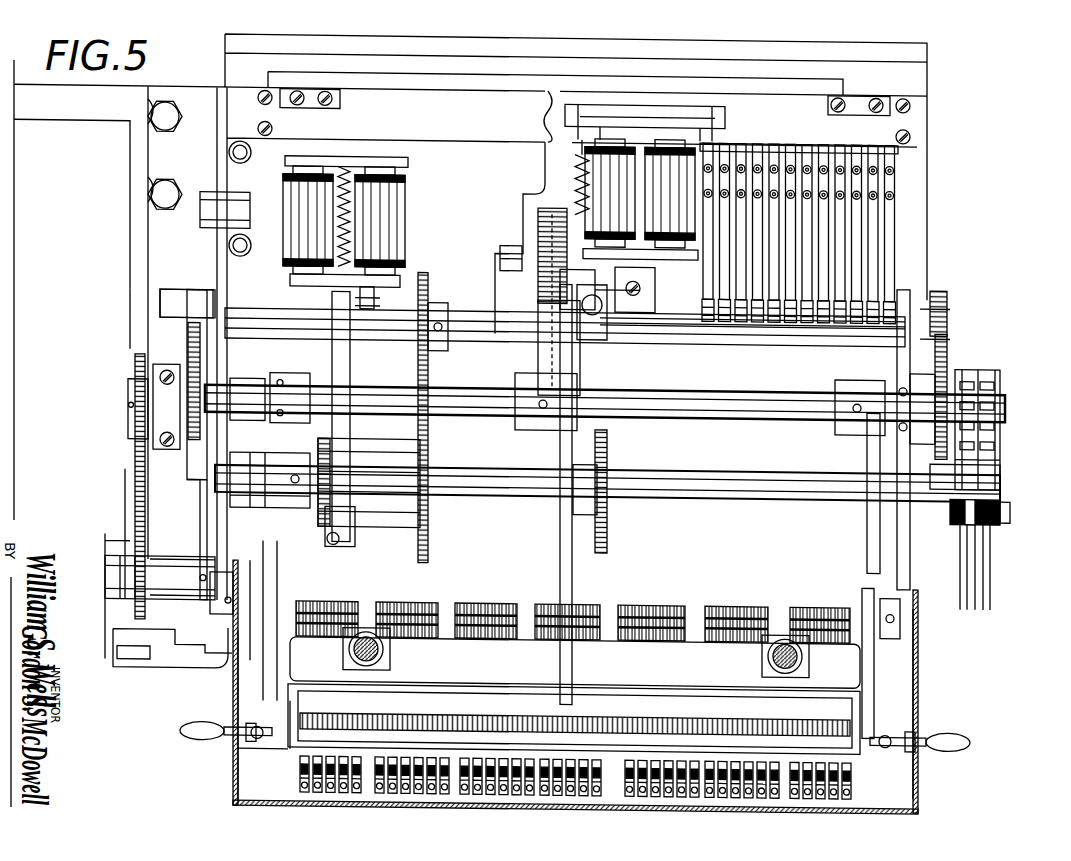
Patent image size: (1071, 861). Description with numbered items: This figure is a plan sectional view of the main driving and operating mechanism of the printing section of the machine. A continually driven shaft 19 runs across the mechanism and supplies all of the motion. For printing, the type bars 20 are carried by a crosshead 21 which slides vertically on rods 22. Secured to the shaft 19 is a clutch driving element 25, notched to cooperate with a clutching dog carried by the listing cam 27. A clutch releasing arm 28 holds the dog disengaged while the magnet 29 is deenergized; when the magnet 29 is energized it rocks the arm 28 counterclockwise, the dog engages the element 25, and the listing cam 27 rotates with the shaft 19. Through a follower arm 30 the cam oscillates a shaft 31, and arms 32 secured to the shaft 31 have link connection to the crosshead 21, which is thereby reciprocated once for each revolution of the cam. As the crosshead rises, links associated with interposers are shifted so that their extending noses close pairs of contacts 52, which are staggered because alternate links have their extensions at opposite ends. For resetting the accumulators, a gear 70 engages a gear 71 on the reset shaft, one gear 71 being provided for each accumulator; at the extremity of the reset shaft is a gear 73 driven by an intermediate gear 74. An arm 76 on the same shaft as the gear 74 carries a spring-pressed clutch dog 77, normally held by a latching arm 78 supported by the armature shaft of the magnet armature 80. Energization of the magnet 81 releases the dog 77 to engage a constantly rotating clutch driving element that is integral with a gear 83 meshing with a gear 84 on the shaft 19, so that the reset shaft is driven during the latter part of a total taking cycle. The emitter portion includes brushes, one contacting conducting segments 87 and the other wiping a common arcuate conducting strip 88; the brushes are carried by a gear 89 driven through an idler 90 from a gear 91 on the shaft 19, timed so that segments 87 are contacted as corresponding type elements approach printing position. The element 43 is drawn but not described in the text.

The shaft 19 is at (500, 318).
The type bars 20 is at (640, 605).
The crosshead 21 is at (520, 690).
The rods 22 is at (390, 648).
The clutch driving element 25 is at (607, 340).
The listing cam 27 is at (538, 210).
The clutch releasing arm 28 is at (578, 118).
The magnet 29 is at (600, 165).
The follower arm 30 is at (535, 298).
The shaft 31 is at (500, 410).
The arms 32 is at (318, 540).
The collar 43 is at (512, 252).
The contacts 52 is at (300, 768).
The gear 70 is at (145, 512).
The gear 71 is at (145, 560).
The gear 73 is at (215, 595).
The intermediate gear 74 is at (212, 470).
The arm 76 is at (330, 498).
The clutch dog 77 is at (352, 538).
The latching arm 78 is at (350, 365).
The magnet armature 80 is at (395, 270).
The magnet 81 is at (412, 205).
The gear 83 is at (420, 462).
The gear 84 is at (428, 367).
The conducting segments 87 is at (995, 405).
The common arcuate conducting strip 88 is at (1000, 490).
The gear 89 is at (960, 570).
The idler 90 is at (947, 360).
The gear 91 is at (947, 292).